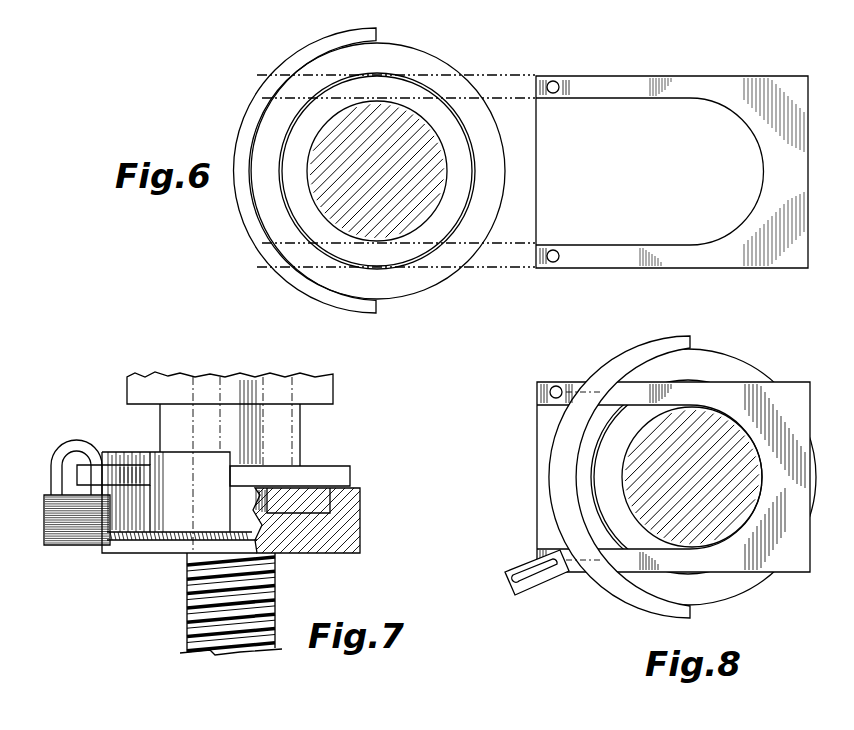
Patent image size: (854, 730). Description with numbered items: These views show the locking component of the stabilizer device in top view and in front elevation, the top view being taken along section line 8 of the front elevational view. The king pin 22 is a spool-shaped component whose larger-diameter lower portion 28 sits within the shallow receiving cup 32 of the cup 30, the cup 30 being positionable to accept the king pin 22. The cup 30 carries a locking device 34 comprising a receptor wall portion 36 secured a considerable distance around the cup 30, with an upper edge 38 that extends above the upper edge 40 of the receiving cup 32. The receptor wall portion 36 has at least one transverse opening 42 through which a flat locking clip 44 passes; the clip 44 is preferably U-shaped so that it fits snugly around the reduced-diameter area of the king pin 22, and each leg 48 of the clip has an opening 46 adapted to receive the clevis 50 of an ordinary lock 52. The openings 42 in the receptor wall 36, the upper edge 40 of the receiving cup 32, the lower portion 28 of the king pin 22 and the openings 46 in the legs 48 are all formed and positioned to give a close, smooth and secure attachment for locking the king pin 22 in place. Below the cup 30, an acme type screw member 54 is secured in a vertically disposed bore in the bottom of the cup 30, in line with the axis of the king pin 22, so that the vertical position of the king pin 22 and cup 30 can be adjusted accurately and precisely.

In FIG. 7, the section line 8 is at (26, 460).
In FIG. 7, the king pin 22 is at (305, 424).
In FIG. 7, the lower portion 28 is at (328, 466).
In FIG. 6, the cup 30 is at (430, 45).
In FIG. 7, the cup 30 is at (366, 518).
In FIG. 8, the cup 30 is at (738, 350).
In FIG. 6, the receiving cup 32 is at (432, 286).
In FIG. 7, the receiving cup 32 is at (320, 556).
In FIG. 8, the receiving cup 32 is at (765, 583).
In FIG. 6, the locking device 34 is at (262, 266).
In FIG. 8, the locking device 34 is at (570, 580).
In FIG. 7, the receptor wall portion 36 is at (165, 545).
In FIG. 8, the receptor wall portion 36 is at (622, 606).
In FIG. 6, the upper edge 38 is at (240, 130).
In FIG. 7, the upper edge 38 is at (127, 465).
In FIG. 8, the upper edge 38 is at (547, 480).
In FIG. 6, the upper edge 40 is at (393, 285).
In FIG. 8, the upper edge 40 is at (720, 585).
In FIG. 6, the transverse opening 42 is at (268, 78).
In FIG. 8, the transverse opening 42 is at (570, 380).
In FIG. 6, the flat locking clip 44 is at (764, 72).
In FIG. 8, the flat locking clip 44 is at (786, 378).
In FIG. 6, the opening 46 is at (560, 82).
In FIG. 8, the opening 46 is at (552, 384).
In FIG. 6, the leg 48 is at (620, 78).
In FIG. 8, the leg 48 is at (538, 406).
In FIG. 7, the clevis 50 is at (77, 440).
In FIG. 8, the clevis 50 is at (533, 553).
In FIG. 7, the lock 52 is at (60, 548).
In FIG. 8, the lock 52 is at (530, 588).
In FIG. 7, the acme type screw member 54 is at (183, 625).